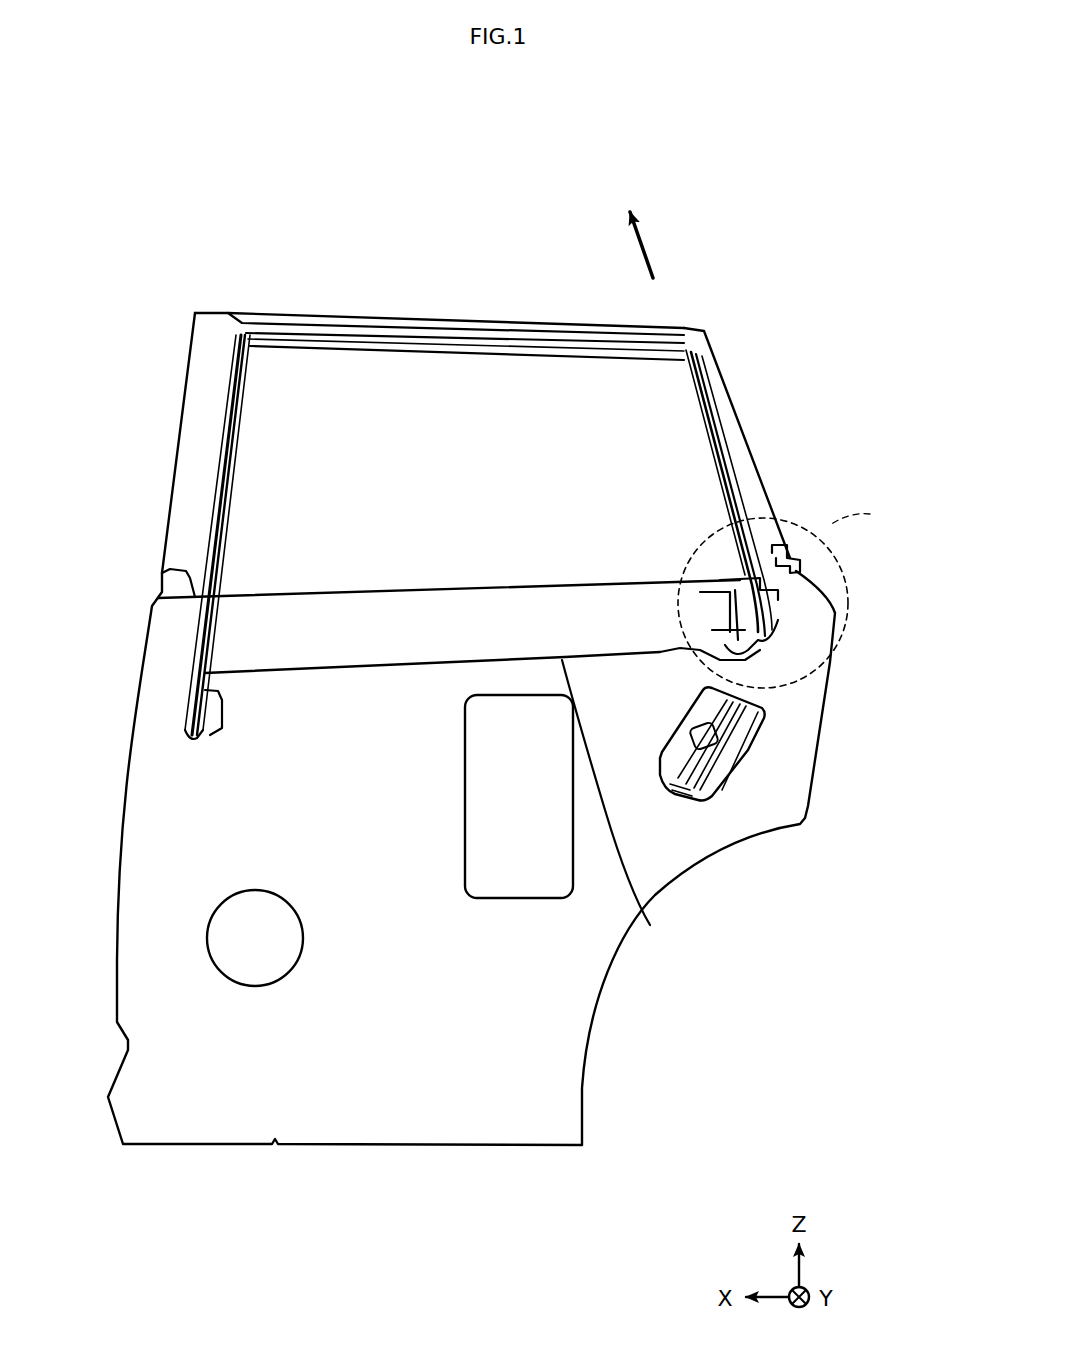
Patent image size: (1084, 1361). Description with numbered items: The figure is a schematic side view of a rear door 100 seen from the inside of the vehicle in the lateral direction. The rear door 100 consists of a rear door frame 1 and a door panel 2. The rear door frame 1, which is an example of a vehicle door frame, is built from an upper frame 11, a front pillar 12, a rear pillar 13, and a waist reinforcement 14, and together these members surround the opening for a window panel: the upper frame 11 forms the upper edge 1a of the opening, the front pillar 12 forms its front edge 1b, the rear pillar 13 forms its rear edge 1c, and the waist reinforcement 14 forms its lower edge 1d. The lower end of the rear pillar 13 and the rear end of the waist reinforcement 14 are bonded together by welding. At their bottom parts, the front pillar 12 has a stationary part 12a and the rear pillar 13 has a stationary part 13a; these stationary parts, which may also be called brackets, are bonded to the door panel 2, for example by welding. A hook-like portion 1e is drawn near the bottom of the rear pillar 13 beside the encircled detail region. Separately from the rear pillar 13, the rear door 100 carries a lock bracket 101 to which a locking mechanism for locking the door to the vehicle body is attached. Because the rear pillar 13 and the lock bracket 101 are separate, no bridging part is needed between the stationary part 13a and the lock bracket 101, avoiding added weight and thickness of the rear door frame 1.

The rear door 100 is at (712, 124).
The rear door frame 1 is at (684, 327).
The upper edge 1a is at (380, 313).
The front edge 1b is at (177, 458).
The rear edge 1c is at (761, 483).
The lower edge 1d is at (650, 925).
The hook portion 1e is at (798, 572).
The upper frame 11 is at (439, 306).
The front pillar 12 is at (158, 526).
The stationary part 12a is at (195, 666).
The rear pillar 13 is at (793, 494).
The stationary part 13a is at (803, 607).
The waist reinforcement 14 is at (507, 583).
The door panel 2 is at (822, 764).
The lock bracket 101 is at (738, 778).